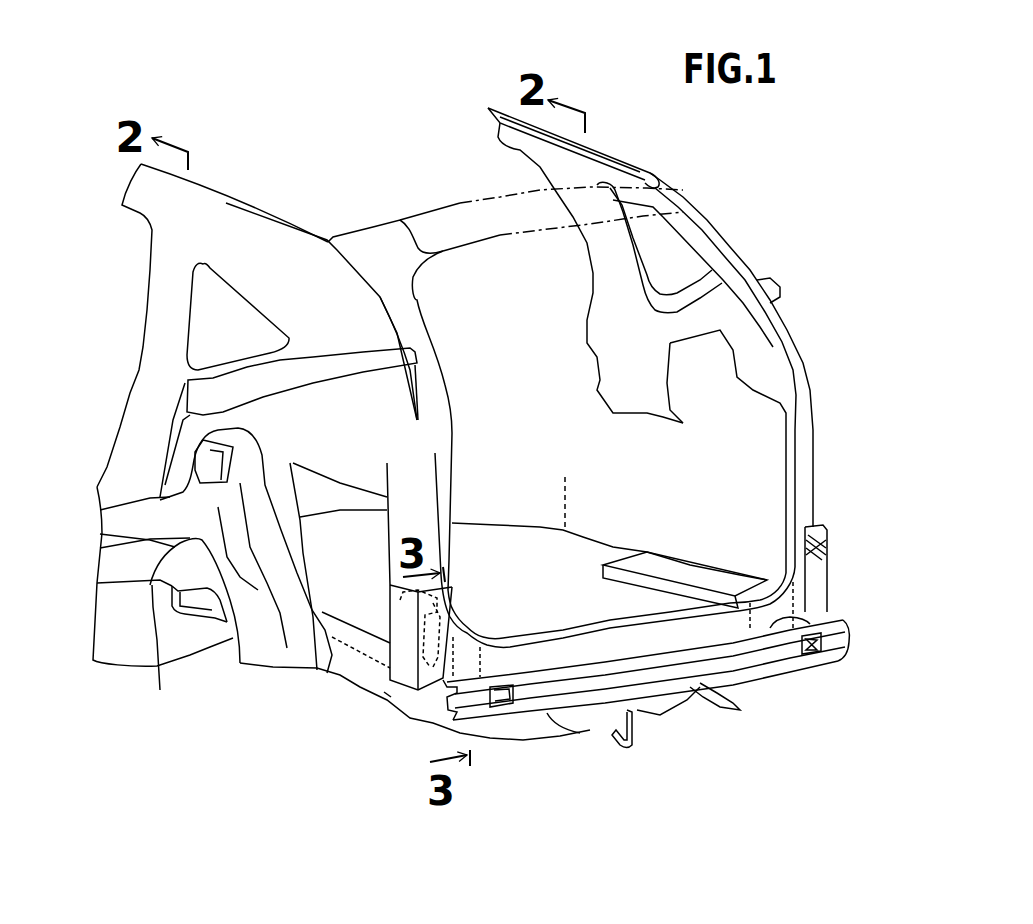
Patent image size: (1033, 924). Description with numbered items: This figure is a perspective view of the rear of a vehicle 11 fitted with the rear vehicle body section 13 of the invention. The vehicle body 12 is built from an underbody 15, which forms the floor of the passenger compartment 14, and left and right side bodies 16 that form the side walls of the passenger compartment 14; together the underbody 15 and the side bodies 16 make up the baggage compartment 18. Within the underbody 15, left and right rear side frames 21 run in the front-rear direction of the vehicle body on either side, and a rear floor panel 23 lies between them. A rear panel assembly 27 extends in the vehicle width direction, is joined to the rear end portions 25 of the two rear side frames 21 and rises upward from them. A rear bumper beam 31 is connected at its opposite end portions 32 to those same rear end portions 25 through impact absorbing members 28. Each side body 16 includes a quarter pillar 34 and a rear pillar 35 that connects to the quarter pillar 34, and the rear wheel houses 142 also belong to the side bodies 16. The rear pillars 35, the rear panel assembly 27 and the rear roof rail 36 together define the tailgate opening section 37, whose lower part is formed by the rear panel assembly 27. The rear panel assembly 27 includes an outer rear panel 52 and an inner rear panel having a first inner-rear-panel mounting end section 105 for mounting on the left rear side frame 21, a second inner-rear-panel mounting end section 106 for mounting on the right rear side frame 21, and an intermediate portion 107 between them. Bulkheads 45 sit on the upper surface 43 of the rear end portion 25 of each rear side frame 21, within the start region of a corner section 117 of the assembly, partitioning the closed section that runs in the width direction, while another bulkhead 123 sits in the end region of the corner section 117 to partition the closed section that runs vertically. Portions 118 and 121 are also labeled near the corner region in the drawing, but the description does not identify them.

The vehicle 11 is at (288, 95).
The vehicle body 12 is at (217, 187).
The rear vehicle body section 13 is at (373, 780).
The passenger compartment 14 is at (417, 167).
The underbody 15 is at (580, 507).
The side bodies 16 is at (137, 323).
The baggage compartment 18 is at (673, 450).
The rear side frames 21 is at (633, 540).
The rear floor panel 23 is at (493, 533).
The rear end portions 25 is at (387, 700).
The rear panel assembly 27 is at (575, 613).
The impact absorbing members 28 is at (507, 713).
The rear bumper beam 31 is at (585, 665).
The opposite end portions 32 is at (473, 681).
The quarter pillar 34 is at (150, 355).
The rear pillar 35 is at (440, 403).
The rear roof rail 36 is at (500, 207).
The rear-vehicle-body opening section 37 is at (463, 440).
The upper surface 43 is at (357, 643).
The bulkheads 45 is at (424, 668).
The outer rear panel 52 is at (500, 650).
The first inner-rear-panel mounting end section 105 is at (482, 631).
The second inner-rear-panel mounting end section 106 is at (768, 582).
The intermediate portion 107 is at (603, 633).
The corner section 117 is at (783, 573).
The lower flange 118 is at (490, 640).
The vertical flange 121 is at (455, 600).
The bulkhead 123 is at (830, 525).
The rear wheel houses 142 is at (180, 660).